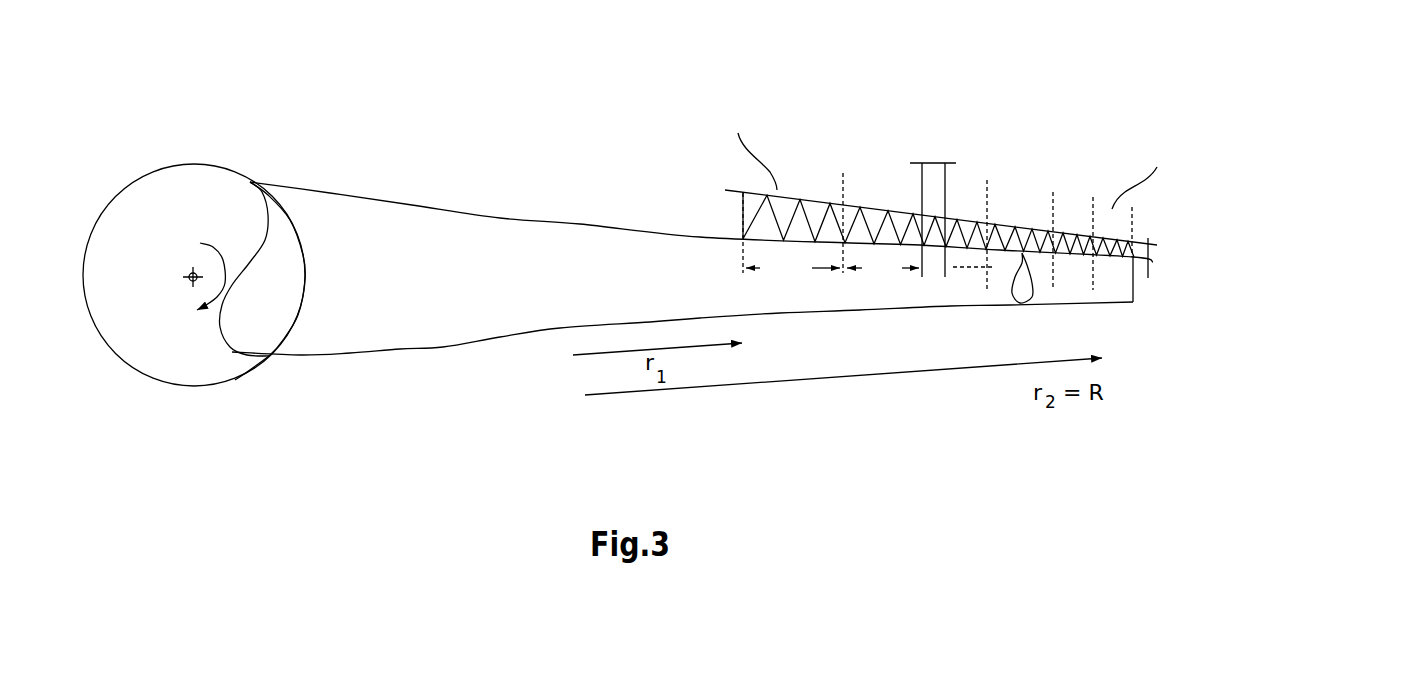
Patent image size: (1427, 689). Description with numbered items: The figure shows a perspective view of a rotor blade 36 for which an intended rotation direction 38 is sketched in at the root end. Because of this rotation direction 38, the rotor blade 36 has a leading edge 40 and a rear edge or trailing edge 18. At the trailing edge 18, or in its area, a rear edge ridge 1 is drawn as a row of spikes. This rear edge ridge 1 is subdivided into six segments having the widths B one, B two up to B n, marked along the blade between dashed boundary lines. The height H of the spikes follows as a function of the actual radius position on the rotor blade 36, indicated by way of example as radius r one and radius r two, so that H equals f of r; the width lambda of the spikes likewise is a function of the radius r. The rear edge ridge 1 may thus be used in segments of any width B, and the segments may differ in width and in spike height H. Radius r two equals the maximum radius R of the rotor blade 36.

The rear edge ridge 1 is at (1023, 175).
The trailing edge 18 is at (686, 261).
The rotor blade 36 is at (418, 160).
The rotation direction 38 is at (217, 240).
The leading edge 40 is at (443, 354).